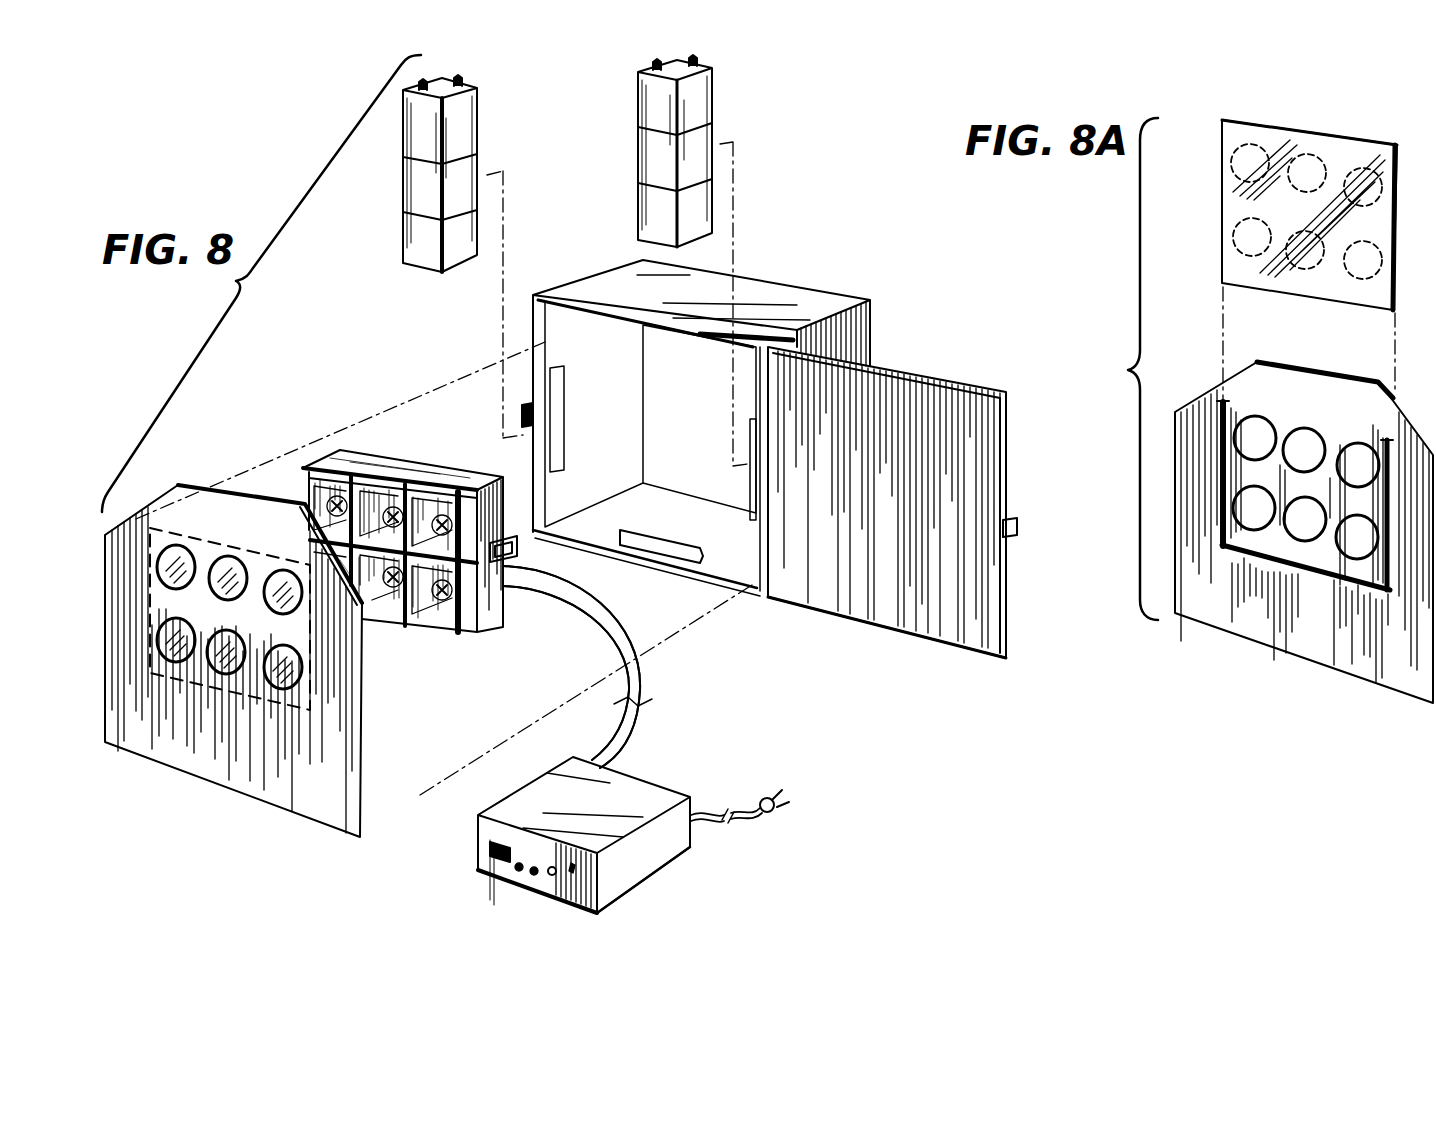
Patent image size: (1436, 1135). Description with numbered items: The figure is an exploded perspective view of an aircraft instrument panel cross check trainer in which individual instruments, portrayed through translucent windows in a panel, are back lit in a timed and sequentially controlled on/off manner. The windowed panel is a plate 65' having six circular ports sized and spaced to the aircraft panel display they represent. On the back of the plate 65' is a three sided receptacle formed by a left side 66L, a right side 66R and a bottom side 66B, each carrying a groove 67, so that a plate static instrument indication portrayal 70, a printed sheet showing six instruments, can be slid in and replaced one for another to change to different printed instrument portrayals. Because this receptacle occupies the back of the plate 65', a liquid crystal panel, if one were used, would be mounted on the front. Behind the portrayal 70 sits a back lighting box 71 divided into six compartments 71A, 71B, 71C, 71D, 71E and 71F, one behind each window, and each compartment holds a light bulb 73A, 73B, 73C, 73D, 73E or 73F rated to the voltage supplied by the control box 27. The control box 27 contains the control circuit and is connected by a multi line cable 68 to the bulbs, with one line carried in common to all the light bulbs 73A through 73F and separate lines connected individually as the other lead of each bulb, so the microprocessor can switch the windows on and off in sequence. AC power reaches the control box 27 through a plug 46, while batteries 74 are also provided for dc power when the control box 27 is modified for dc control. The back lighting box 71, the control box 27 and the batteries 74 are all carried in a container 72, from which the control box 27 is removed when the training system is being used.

In FIG. 8, the plate static instrument indication portrayal 70 is at (196, 712).
In FIG. 8A, the plate static instrument indication portrayal 70 is at (1222, 190).
In FIG. 8, the plate 65' is at (233, 668).
In FIG. 8A, the plate 65' is at (1304, 533).
In FIG. 8, the back lighting box 71 is at (568, 584).
In FIG. 8, the compartment 71A is at (322, 501).
In FIG. 8, the compartment 71B is at (362, 487).
In FIG. 8, the compartment 71C is at (391, 506).
In FIG. 8, the compartment 71D is at (455, 613).
In FIG. 8, the compartment 71E is at (400, 605).
In FIG. 8, the compartment 71F is at (350, 545).
In FIG. 8, the light bulb 73A is at (312, 492).
In FIG. 8, the light bulb 73B is at (368, 487).
In FIG. 8, the light bulb 73C is at (440, 513).
In FIG. 8, the light bulb 73D is at (453, 590).
In FIG. 8, the light bulb 73E is at (388, 598).
In FIG. 8, the light bulb 73F is at (350, 592).
In FIG. 8, the container 72 is at (832, 292).
In FIG. 8, the batteries 74 is at (638, 108).
In FIG. 8, the multi line cable 68 is at (632, 717).
In FIG. 8, the control box 27 is at (642, 783).
In FIG. 8, the plug 46 is at (779, 810).
In FIG. 8A, the groove 67 is at (1252, 400).
In FIG. 8A, the right side of grooved receptacle 66R is at (1218, 428).
In FIG. 8A, the bottom side of grooved receptacle 66B is at (1315, 567).
In FIG. 8A, the left side of grooved receptacle 66L is at (1412, 585).